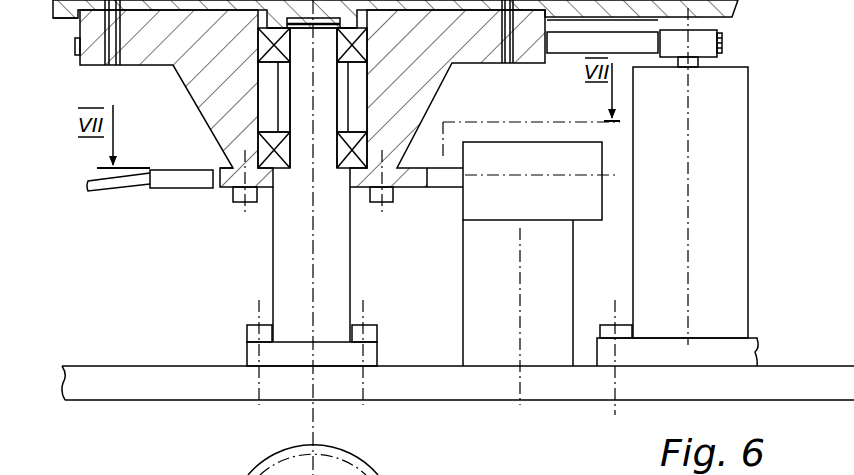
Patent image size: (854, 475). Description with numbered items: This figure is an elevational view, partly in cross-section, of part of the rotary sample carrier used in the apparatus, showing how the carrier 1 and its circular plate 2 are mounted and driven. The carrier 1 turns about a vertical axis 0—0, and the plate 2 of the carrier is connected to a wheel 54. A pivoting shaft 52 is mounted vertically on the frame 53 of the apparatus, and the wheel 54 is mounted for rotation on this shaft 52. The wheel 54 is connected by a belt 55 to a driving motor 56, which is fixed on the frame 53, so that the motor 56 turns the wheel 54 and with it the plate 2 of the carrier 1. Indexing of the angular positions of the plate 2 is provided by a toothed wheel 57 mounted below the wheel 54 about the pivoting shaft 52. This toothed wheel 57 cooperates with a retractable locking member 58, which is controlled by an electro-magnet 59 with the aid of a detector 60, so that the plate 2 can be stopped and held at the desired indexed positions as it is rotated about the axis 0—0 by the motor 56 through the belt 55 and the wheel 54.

The vertical axis 0 is at (313, 425).
The carrier 1 is at (190, 196).
The circular plate 2 is at (68, 26).
The pivoting shaft 52 is at (276, 256).
The frame 53 is at (570, 390).
The wheel 54 is at (430, 78).
The belt 55 is at (575, 47).
The driving motor 56 is at (650, 275).
The toothed wheel 57 is at (368, 182).
The retractable locking member 58 is at (357, 460).
The electro-magnet 59 is at (528, 208).
The detector 60 is at (182, 167).